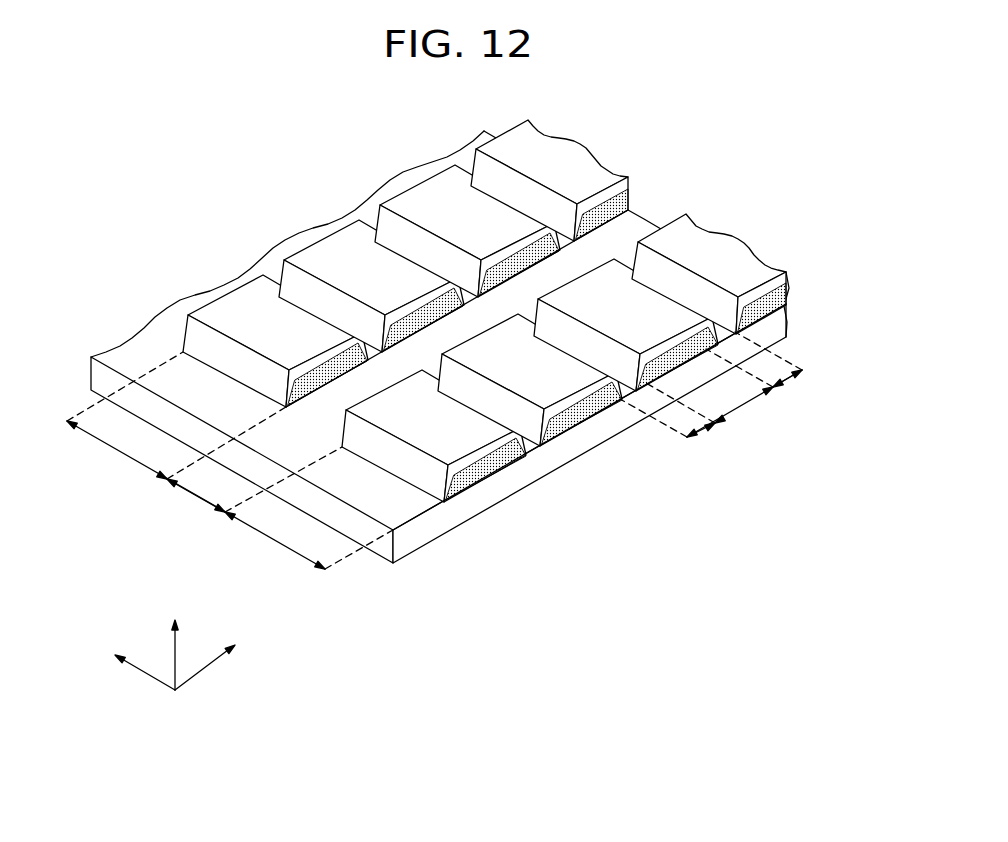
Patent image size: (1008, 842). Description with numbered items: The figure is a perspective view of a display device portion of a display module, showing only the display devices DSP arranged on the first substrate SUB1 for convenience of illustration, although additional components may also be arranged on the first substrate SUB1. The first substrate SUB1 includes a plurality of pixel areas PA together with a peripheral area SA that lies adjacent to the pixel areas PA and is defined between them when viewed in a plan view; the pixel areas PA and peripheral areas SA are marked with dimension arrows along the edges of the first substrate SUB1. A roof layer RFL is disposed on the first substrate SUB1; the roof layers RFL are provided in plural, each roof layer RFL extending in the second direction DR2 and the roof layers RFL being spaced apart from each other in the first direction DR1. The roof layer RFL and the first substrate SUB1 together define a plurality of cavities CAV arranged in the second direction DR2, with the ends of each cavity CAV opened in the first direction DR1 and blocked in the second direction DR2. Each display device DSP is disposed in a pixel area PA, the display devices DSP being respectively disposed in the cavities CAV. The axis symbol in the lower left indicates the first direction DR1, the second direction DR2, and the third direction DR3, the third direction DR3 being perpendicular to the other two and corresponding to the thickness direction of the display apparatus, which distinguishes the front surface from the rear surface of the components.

The roof layer RFL is at (484, 325).
The first substrate SUB1 is at (778, 323).
The display device DSP is at (583, 408).
The cavity CAV is at (548, 425).
The pixel area PA is at (434, 450).
The peripheral area SA is at (495, 443).
The first direction DR1 is at (131, 659).
The second direction DR2 is at (219, 659).
The third direction DR3 is at (175, 641).